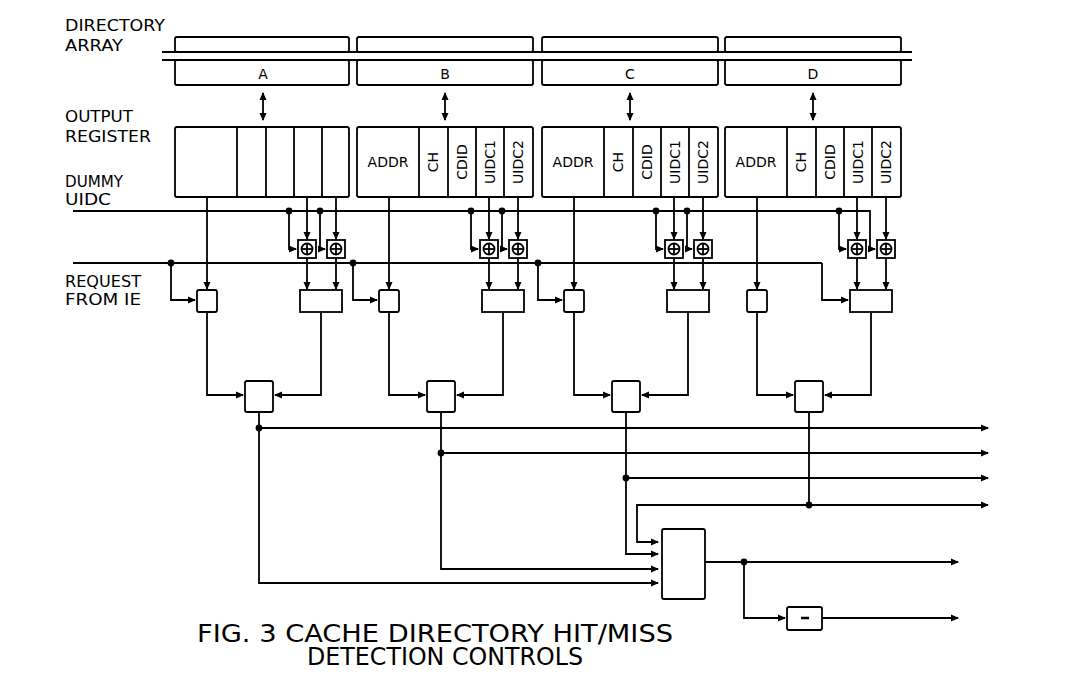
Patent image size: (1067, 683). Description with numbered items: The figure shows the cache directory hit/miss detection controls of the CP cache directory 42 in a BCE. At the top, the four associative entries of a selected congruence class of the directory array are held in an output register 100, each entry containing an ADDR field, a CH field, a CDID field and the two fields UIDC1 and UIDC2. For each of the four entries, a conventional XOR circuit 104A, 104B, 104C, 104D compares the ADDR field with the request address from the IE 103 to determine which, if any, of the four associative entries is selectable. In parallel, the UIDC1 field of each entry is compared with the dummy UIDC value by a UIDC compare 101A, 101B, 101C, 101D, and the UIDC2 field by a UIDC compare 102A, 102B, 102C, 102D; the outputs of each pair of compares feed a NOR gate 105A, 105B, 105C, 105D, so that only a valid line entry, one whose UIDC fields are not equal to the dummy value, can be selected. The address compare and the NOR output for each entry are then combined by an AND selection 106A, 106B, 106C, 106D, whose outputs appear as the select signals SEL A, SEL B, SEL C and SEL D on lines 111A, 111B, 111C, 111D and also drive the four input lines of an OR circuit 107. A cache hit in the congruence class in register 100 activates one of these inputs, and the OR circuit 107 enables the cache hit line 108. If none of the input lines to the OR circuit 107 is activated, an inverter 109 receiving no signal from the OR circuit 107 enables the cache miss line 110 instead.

The directory 42 is at (146, 433).
The output register 100 is at (243, 162).
The UIDC compare 101A is at (280, 229).
The UIDC compare 101B is at (462, 229).
The UIDC compare 101C is at (647, 229).
The UIDC compare 101D is at (831, 229).
The UIDC compare 102A is at (355, 229).
The UIDC compare 102B is at (537, 229).
The UIDC compare 102C is at (722, 229).
The UIDC compare 102D is at (908, 229).
The request address from the IE 103 is at (460, 271).
The XOR circuit 104A is at (224, 266).
The XOR circuit 104B is at (406, 266).
The XOR circuit 104C is at (591, 266).
The XOR circuit 104D is at (777, 266).
The NOR gate 105A is at (308, 297).
The NOR gate 105B is at (492, 297).
The NOR gate 105C is at (676, 297).
The NOR gate 105D is at (859, 297).
The selection 106A is at (274, 402).
The selection 106B is at (456, 402).
The selection 106C is at (641, 402).
The selection 106D is at (824, 402).
The OR circuit 107 is at (707, 548).
The cache hit line 108 is at (852, 554).
The inverter 109 is at (783, 606).
The cache miss line 110 is at (911, 611).
The select A line 111A is at (649, 497).
The select B line 111B is at (740, 490).
The select C line 111C is at (832, 483).
The select D line 111D is at (838, 477).